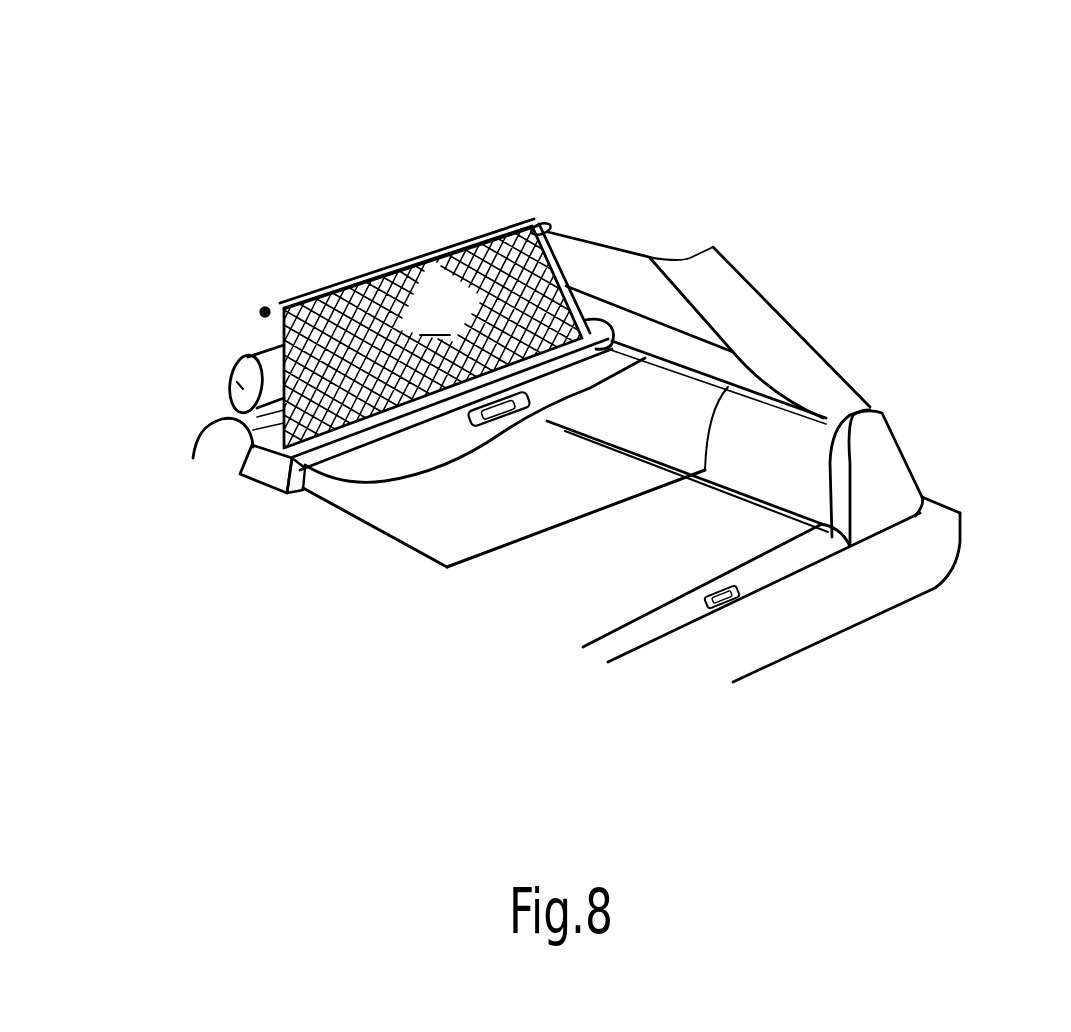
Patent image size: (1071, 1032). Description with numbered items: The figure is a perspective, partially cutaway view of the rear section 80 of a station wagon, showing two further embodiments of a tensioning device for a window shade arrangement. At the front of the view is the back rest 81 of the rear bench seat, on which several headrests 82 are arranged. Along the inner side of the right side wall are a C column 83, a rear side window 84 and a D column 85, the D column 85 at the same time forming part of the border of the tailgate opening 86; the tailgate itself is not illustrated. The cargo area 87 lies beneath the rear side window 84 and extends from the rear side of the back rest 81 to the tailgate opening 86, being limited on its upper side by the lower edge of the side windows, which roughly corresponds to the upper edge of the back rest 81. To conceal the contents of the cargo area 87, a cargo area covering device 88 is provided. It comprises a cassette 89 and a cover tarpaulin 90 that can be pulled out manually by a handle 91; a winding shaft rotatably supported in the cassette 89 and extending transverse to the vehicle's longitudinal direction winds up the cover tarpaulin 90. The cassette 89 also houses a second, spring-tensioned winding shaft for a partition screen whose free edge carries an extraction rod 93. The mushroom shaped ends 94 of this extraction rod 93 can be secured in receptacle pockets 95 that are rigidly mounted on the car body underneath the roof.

The rear section 80 is at (286, 645).
The back rest 81 is at (212, 421).
The headrests 82 is at (233, 366).
The C column 83 is at (552, 241).
The rear side window 84 is at (617, 278).
The D column 85 is at (770, 348).
The tailgate opening 86 is at (680, 612).
The cargo area 87 is at (496, 527).
The cargo area covering device 88 is at (258, 505).
The cassette 89 is at (305, 490).
The cover tarpaulin 90 is at (363, 449).
The handle 91 is at (507, 420).
The extraction rod 93 is at (369, 278).
The mushroom shaped ends 94 is at (270, 307).
The receptacle pockets 95 is at (548, 226).